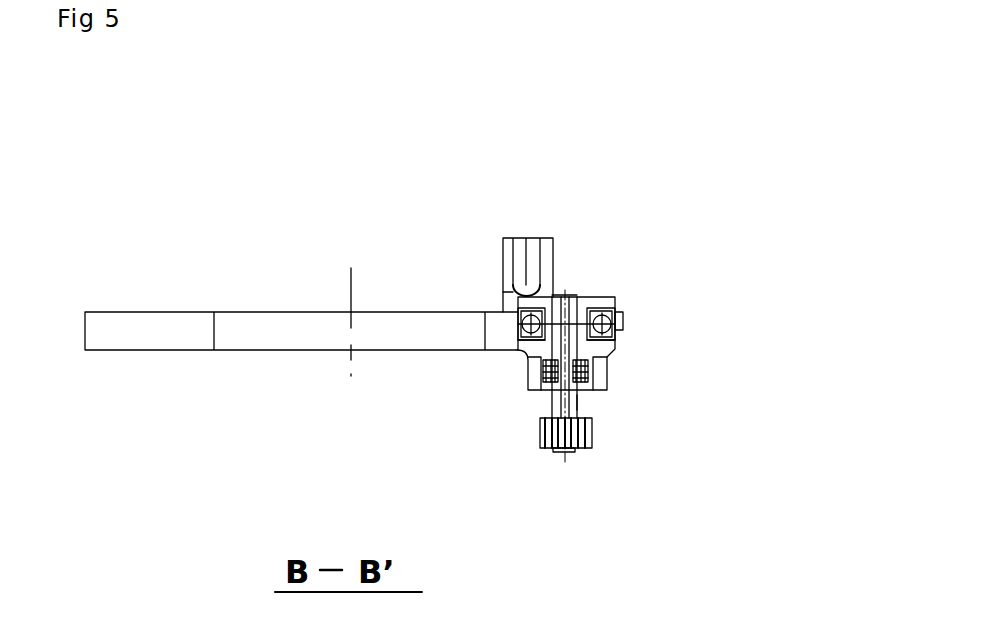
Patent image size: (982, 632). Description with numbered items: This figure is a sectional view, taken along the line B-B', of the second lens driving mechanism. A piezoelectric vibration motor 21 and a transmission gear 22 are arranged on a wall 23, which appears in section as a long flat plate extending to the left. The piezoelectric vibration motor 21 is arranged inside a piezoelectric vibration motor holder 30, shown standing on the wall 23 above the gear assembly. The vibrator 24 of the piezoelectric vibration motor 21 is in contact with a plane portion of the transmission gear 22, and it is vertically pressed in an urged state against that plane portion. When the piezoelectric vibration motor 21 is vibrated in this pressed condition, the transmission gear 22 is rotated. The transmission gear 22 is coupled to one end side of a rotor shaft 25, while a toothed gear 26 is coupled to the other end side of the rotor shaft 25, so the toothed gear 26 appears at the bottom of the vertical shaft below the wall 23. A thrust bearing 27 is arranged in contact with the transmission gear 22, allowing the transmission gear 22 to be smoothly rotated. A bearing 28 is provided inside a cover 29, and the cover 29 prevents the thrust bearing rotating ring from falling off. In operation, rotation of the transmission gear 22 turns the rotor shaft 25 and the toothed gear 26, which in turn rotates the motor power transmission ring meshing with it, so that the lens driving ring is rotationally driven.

The piezoelectric vibration motor 21 is at (526, 240).
The transmission gear 22 is at (617, 297).
The wall 23 is at (213, 312).
The vibrator 24 is at (504, 292).
The rotor shaft 25 is at (580, 402).
The toothed gear 26 is at (592, 449).
The thrust bearing 27 is at (623, 330).
The bearing 28 is at (607, 388).
The cover 29 is at (616, 350).
The piezoelectric vibration motor holder 30 is at (503, 240).